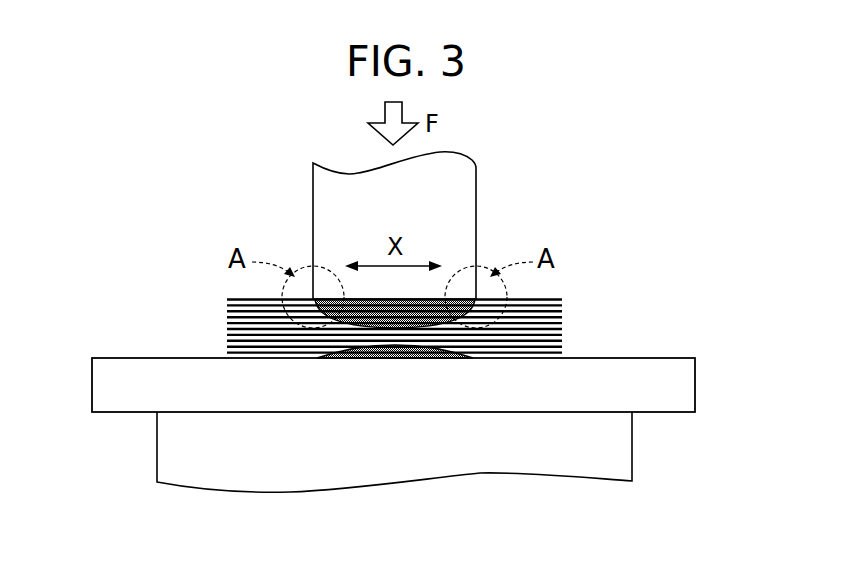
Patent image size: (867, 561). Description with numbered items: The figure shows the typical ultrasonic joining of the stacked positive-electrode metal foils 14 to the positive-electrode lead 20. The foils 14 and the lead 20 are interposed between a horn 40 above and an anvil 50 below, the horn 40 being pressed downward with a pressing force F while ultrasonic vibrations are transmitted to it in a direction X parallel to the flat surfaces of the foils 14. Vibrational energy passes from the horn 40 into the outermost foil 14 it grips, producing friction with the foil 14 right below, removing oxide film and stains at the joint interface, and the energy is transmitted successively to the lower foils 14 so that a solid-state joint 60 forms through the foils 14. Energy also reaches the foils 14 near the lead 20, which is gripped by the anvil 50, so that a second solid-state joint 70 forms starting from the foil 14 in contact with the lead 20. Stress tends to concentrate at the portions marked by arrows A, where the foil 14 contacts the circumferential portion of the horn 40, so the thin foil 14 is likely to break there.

The positive-electrode metal foils 14 is at (577, 298).
The positive-electrode lead 20 is at (696, 385).
The horn 40 is at (477, 221).
The anvil 50 is at (486, 474).
The solid-state joint 60 is at (364, 324).
The solid-state joint 70 is at (386, 357).